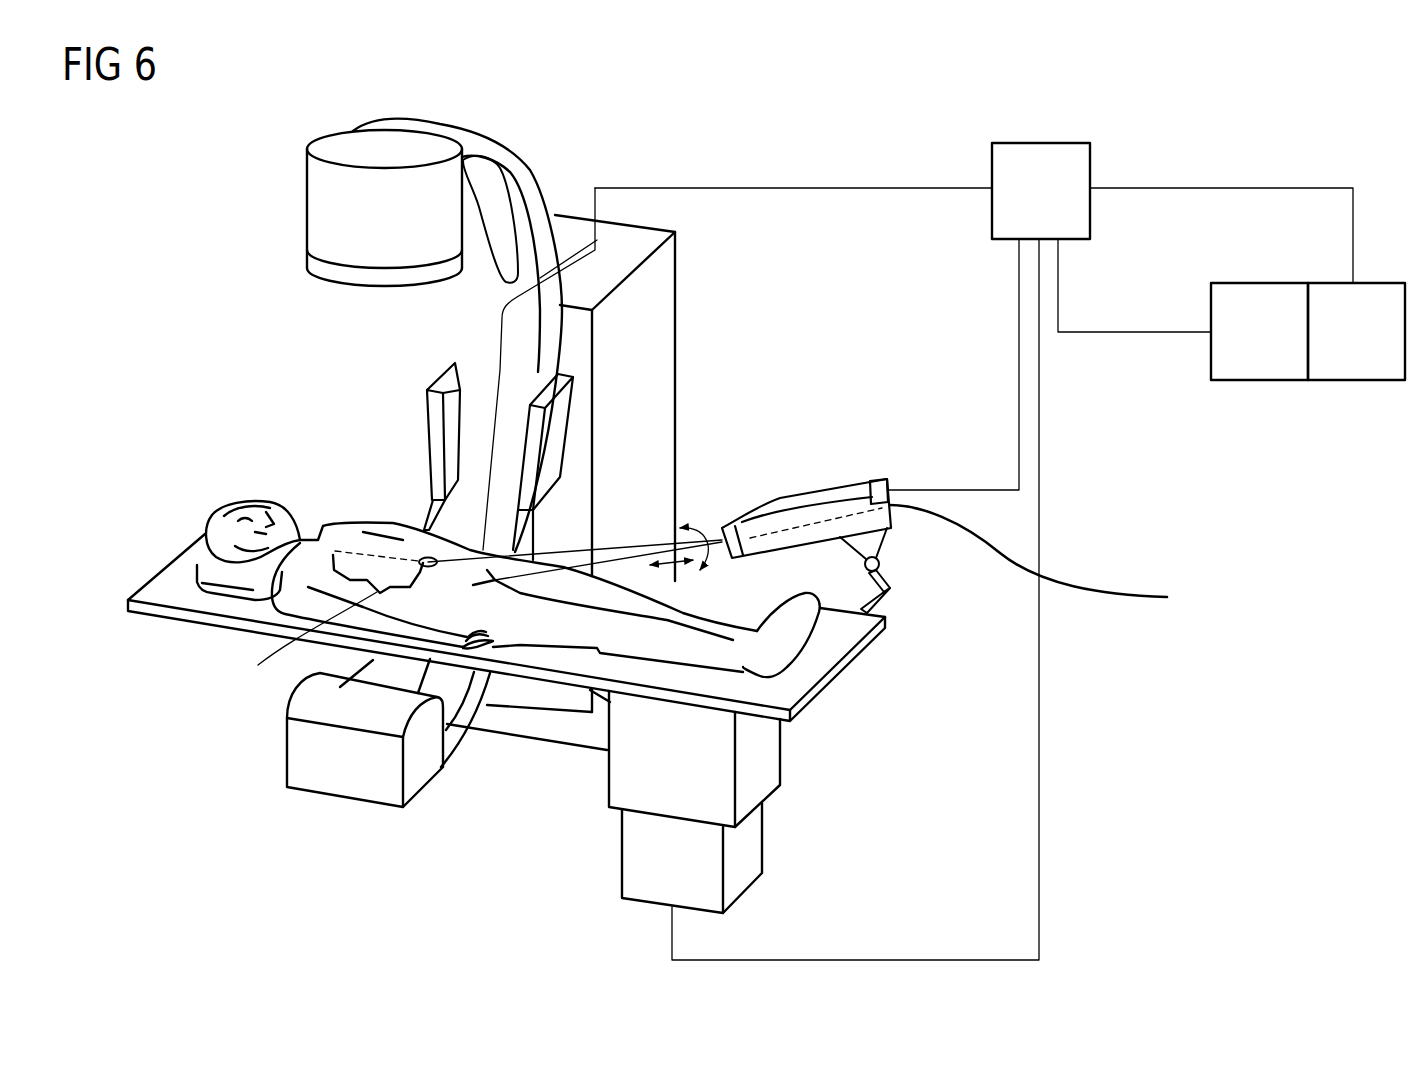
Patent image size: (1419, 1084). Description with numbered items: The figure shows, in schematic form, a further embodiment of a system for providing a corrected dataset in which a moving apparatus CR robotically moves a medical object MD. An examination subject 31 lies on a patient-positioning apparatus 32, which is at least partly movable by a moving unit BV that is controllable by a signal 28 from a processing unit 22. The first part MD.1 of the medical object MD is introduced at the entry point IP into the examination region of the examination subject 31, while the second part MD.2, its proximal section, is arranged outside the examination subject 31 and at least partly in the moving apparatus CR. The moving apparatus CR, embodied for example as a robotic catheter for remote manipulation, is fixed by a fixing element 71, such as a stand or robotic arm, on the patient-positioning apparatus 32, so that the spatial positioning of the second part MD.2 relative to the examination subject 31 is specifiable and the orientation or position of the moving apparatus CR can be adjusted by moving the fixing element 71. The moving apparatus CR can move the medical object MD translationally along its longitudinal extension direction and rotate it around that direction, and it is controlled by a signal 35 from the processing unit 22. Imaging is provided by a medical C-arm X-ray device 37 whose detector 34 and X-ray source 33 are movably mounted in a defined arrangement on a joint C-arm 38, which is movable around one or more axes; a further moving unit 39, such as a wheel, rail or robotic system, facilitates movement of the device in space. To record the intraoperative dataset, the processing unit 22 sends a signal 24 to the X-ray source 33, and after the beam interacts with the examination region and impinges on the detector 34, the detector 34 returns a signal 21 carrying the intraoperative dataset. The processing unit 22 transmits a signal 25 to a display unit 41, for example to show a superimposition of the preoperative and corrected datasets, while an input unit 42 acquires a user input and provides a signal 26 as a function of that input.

The signal 21 is at (485, 198).
The processing unit 22 is at (1090, 218).
The signal 24 is at (502, 318).
The signal 25 is at (1138, 333).
The signal 26 is at (1255, 188).
The signal 28 is at (1040, 695).
The examination subject 31 is at (272, 470).
The patient-positioning apparatus 32 is at (153, 615).
The X-ray source 33 is at (340, 787).
The detector 34 is at (322, 220).
The signal 35 is at (962, 490).
The medical C-arm X-ray device 37 is at (320, 122).
The C-arm 38 is at (540, 193).
The further moving unit 39 is at (543, 735).
The display unit 41 is at (1257, 382).
The input unit 42 is at (1355, 382).
The fixing element 71 is at (890, 577).
The entry point IP is at (418, 545).
The moving apparatus CR is at (818, 483).
The medical object MD is at (1120, 590).
The first part of the medical object MD.1 is at (302, 654).
The second part of the medical object MD.2 is at (638, 532).
The moving unit BV is at (742, 878).